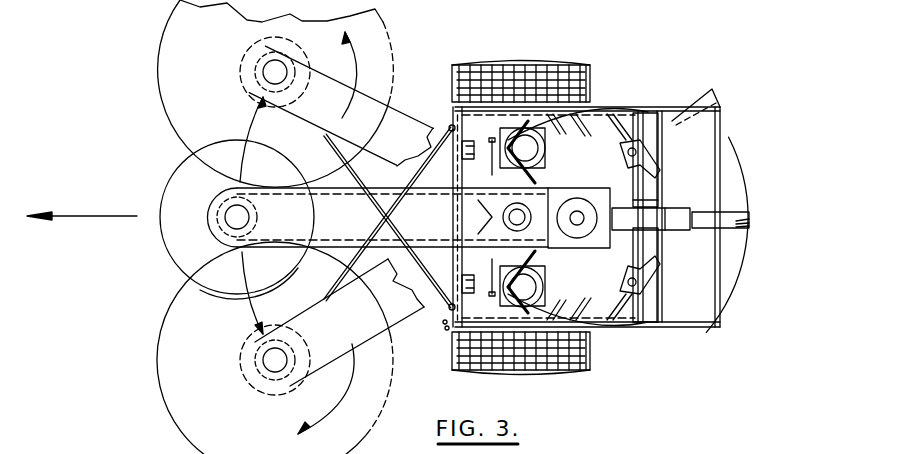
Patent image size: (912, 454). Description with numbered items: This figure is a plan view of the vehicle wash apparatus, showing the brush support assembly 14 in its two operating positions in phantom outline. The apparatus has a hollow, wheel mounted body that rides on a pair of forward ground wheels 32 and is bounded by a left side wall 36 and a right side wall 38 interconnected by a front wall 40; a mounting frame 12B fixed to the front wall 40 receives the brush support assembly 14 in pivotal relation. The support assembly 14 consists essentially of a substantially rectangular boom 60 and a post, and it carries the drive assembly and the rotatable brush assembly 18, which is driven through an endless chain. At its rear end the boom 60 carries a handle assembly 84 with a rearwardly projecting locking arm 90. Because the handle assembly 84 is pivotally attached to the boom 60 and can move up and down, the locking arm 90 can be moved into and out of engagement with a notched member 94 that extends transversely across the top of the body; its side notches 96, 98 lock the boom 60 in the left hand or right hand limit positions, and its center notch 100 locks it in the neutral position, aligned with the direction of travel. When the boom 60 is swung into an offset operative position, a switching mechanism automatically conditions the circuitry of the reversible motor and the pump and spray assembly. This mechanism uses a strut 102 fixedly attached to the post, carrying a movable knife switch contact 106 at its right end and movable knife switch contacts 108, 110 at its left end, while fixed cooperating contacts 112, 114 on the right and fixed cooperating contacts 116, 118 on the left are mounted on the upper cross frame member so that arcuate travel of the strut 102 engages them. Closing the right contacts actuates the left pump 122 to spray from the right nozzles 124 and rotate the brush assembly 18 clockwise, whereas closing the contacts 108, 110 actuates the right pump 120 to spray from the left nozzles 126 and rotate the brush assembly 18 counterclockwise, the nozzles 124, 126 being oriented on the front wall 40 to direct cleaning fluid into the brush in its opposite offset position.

The frame section 12B is at (645, 112).
The brush support assembly 14 is at (245, 297).
The brush assembly 18 is at (175, 190).
The forward ground wheels 32 is at (557, 72).
The left side wall 36 is at (655, 330).
The right side wall 38 is at (636, 108).
The front wall 40 is at (452, 258).
The boom 60 is at (370, 98).
The handle assembly 84 is at (682, 210).
The locking arm 90 is at (647, 223).
The notched member 94 is at (660, 250).
The side notch 96 is at (674, 110).
The side notch 98 is at (690, 330).
The center notch 100 is at (642, 207).
The strut 102 is at (545, 148).
The movable knife switch contact 106 is at (503, 128).
The movable knife switch contact 108 is at (533, 375).
The movable knife switch contact 110 is at (493, 345).
The fixed cooperating contact 112 is at (478, 110).
The fixed cooperating contact 114 is at (452, 170).
The fixed cooperating contact 116 is at (447, 330).
The fixed cooperating contact 118 is at (450, 320).
The pump 120 is at (528, 112).
The pump 122 is at (567, 374).
The spray nozzles 124 is at (450, 125).
The spray nozzles 126 is at (445, 325).